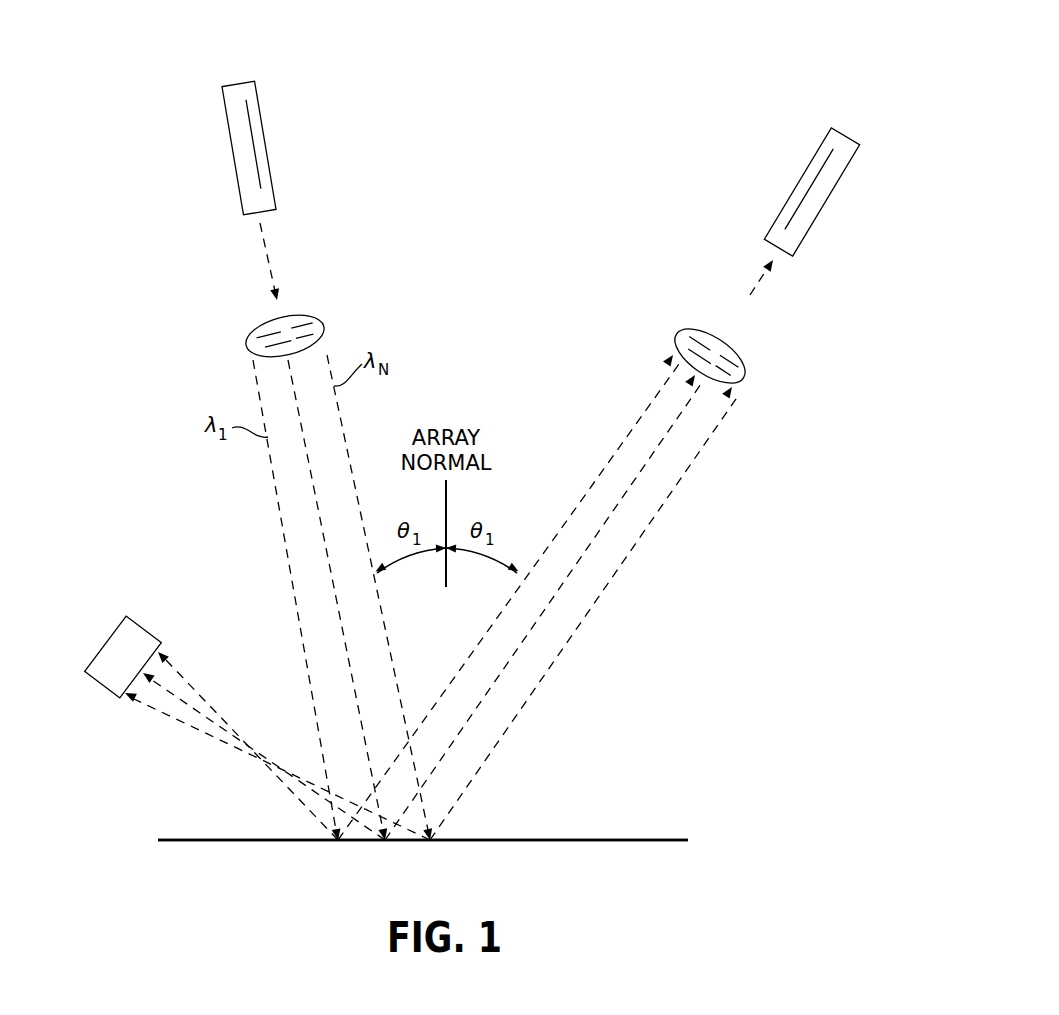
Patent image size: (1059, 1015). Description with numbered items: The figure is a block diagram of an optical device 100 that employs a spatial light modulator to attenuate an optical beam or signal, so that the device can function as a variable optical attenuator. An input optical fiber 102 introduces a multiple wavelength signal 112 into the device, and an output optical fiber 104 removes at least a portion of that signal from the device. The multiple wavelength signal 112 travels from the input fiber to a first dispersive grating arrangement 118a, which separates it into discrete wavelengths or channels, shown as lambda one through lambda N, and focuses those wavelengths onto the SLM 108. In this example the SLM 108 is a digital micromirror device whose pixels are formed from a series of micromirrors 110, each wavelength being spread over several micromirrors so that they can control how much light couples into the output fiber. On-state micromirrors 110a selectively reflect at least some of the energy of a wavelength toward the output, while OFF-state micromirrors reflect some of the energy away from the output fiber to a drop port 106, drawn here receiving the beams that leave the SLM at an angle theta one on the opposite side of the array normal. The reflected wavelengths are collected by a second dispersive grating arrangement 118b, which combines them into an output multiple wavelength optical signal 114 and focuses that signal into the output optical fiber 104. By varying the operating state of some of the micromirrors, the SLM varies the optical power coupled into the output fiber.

The optical device 100 is at (600, 85).
The input optical fiber 102 is at (267, 150).
The output optical fiber 104 is at (793, 192).
The drop port 106 is at (147, 623).
The spatial light modulator (SLM) 108 is at (607, 843).
The micromirrors 110 is at (492, 277).
The on-state micromirrors 110a is at (542, 840).
The multiple wavelength signal 112 is at (267, 258).
The output multiple wavelength optical signal 114 is at (750, 296).
The first dispersive grating arrangement 118a is at (297, 315).
The second dispersive grating arrangement 118b is at (697, 330).